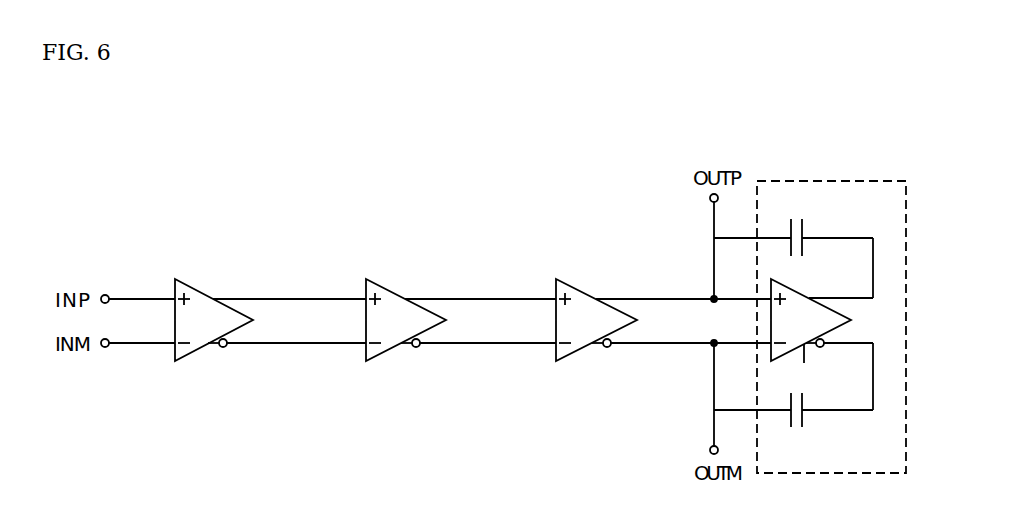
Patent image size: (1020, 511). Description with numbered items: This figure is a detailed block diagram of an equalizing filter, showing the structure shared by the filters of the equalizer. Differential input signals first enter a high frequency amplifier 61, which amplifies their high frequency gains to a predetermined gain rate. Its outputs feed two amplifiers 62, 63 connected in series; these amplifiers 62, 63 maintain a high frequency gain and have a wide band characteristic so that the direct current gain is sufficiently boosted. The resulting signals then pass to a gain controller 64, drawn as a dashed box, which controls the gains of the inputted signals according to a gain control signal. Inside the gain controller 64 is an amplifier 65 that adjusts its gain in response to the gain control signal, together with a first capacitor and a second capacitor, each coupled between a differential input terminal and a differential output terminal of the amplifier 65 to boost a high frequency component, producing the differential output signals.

The high frequency amplifier 61 is at (201, 289).
The amplifier 62 is at (389, 289).
The amplifier 63 is at (580, 289).
The gain controller 64 is at (822, 181).
The amplifier 65 is at (797, 292).